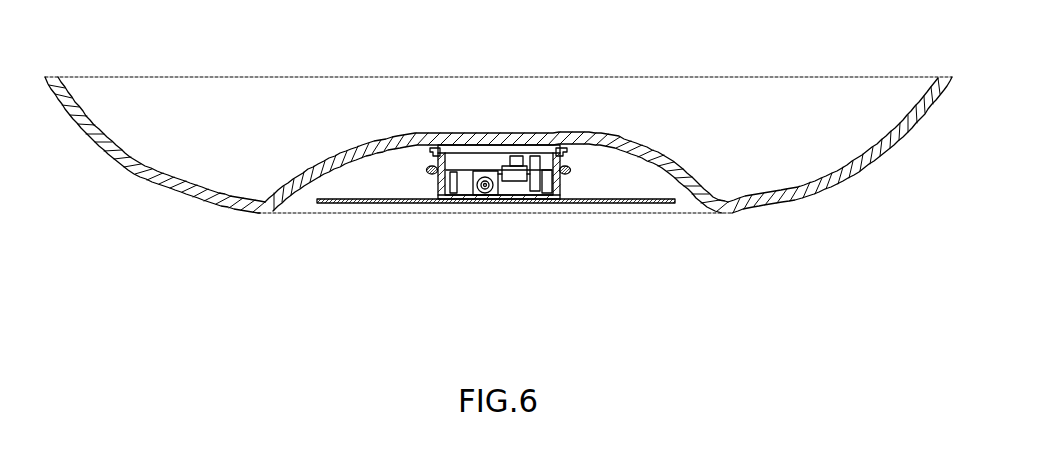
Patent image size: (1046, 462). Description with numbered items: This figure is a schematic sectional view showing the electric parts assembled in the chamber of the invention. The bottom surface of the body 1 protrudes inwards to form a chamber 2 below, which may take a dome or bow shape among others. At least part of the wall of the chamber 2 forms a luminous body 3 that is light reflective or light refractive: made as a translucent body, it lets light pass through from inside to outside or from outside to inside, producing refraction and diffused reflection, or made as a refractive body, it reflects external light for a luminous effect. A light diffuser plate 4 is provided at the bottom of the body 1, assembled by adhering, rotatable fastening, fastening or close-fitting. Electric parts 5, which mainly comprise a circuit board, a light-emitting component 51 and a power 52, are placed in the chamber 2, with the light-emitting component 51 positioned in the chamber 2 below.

The body 1 is at (193, 197).
The chamber 2 is at (388, 171).
The luminous body 3 is at (319, 173).
The light diffuser plate 4 is at (365, 203).
The electric parts 5 is at (518, 246).
The light-emitting component 51 is at (562, 172).
The power 52 is at (513, 181).